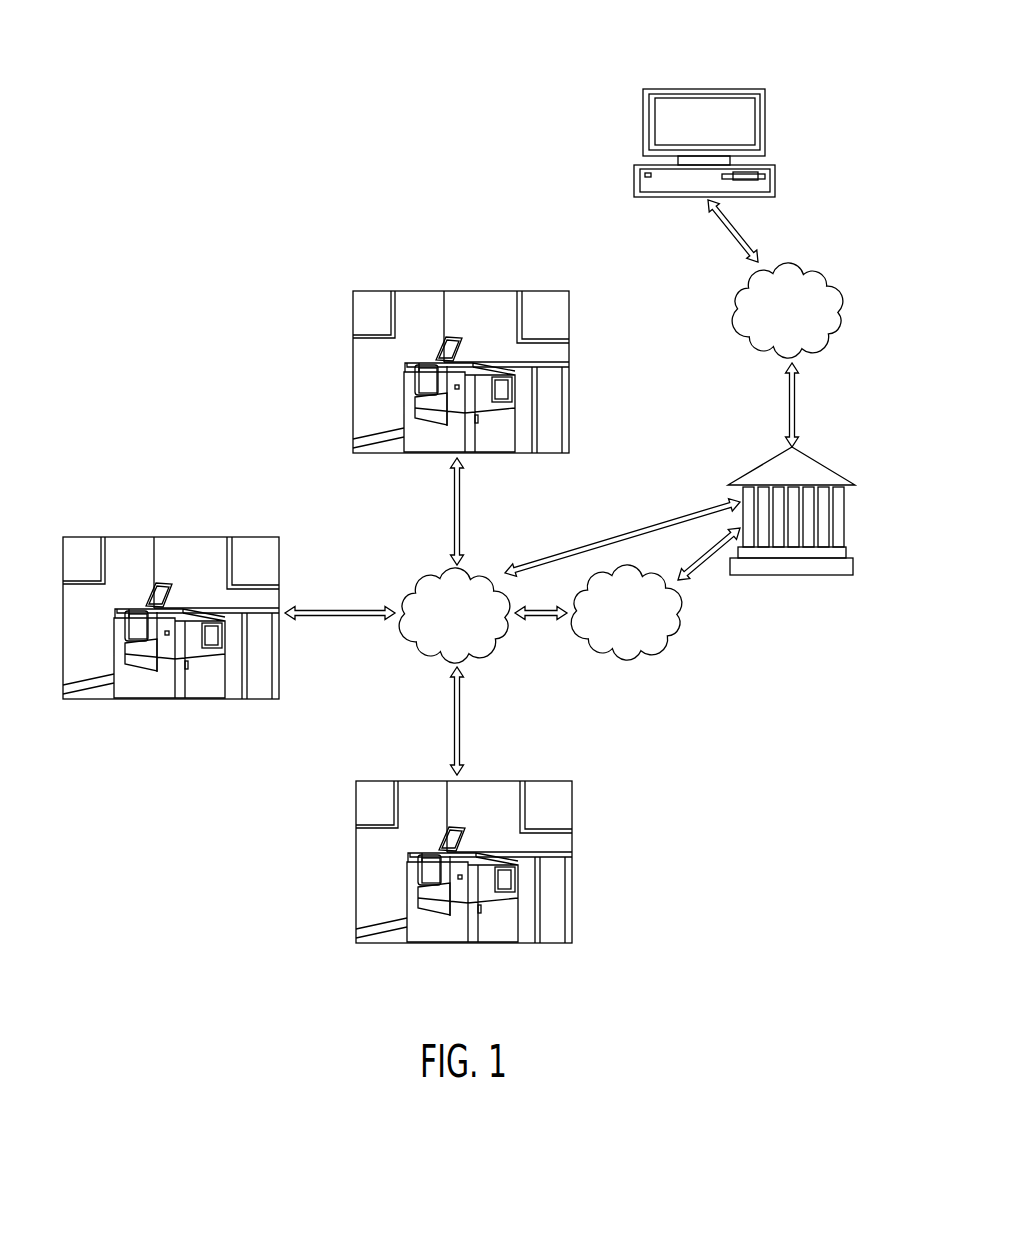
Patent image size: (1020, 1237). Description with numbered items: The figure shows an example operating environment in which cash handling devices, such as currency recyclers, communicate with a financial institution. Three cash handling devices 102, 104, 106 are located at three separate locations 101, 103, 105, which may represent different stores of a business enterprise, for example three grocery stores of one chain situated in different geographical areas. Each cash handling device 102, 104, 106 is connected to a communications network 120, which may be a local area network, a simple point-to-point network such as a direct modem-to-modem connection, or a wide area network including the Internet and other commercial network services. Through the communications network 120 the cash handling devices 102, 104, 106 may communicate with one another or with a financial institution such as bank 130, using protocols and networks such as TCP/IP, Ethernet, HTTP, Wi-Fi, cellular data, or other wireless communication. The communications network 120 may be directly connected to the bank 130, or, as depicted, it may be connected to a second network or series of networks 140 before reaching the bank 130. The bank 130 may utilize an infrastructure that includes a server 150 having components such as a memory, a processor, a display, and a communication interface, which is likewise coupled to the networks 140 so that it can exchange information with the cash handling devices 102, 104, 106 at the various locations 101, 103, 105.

The location 101 is at (473, 300).
The cash handling device 102 is at (423, 440).
The location 103 is at (185, 545).
The cash handling device 104 is at (130, 687).
The location 105 is at (363, 853).
The cash handling device 106 is at (430, 933).
The communications network 120 is at (492, 648).
The bank 130 is at (765, 460).
The second network or series of networks 140 is at (732, 303).
The server 150 is at (735, 88).